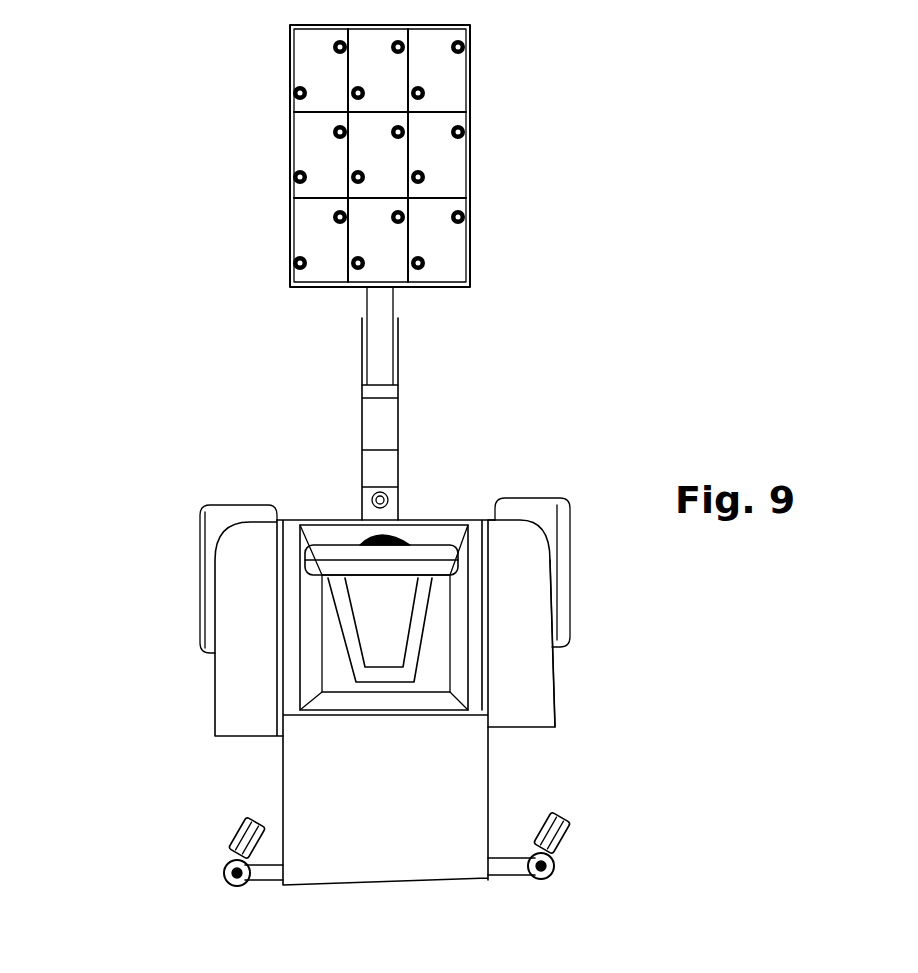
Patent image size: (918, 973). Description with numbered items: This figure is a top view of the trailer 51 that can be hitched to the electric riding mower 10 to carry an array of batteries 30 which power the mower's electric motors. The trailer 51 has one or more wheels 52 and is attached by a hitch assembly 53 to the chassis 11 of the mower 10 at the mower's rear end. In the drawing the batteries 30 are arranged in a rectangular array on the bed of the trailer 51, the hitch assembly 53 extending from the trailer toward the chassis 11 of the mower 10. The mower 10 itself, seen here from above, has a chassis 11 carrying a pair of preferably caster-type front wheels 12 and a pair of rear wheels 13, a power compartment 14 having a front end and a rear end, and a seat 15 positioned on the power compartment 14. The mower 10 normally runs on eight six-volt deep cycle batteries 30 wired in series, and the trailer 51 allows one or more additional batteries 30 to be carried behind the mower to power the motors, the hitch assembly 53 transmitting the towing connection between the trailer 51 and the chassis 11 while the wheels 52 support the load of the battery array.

The riding mower 10 is at (157, 757).
The chassis 11 is at (406, 818).
The front wheels 12 is at (566, 812).
The rear wheels 13 is at (570, 622).
The power compartment 14 is at (283, 647).
The seat 15 is at (312, 545).
The batteries 30 is at (300, 66).
The trailer 51 is at (260, 323).
The wheels 52 is at (470, 160).
The hitch assembly 53 is at (400, 438).